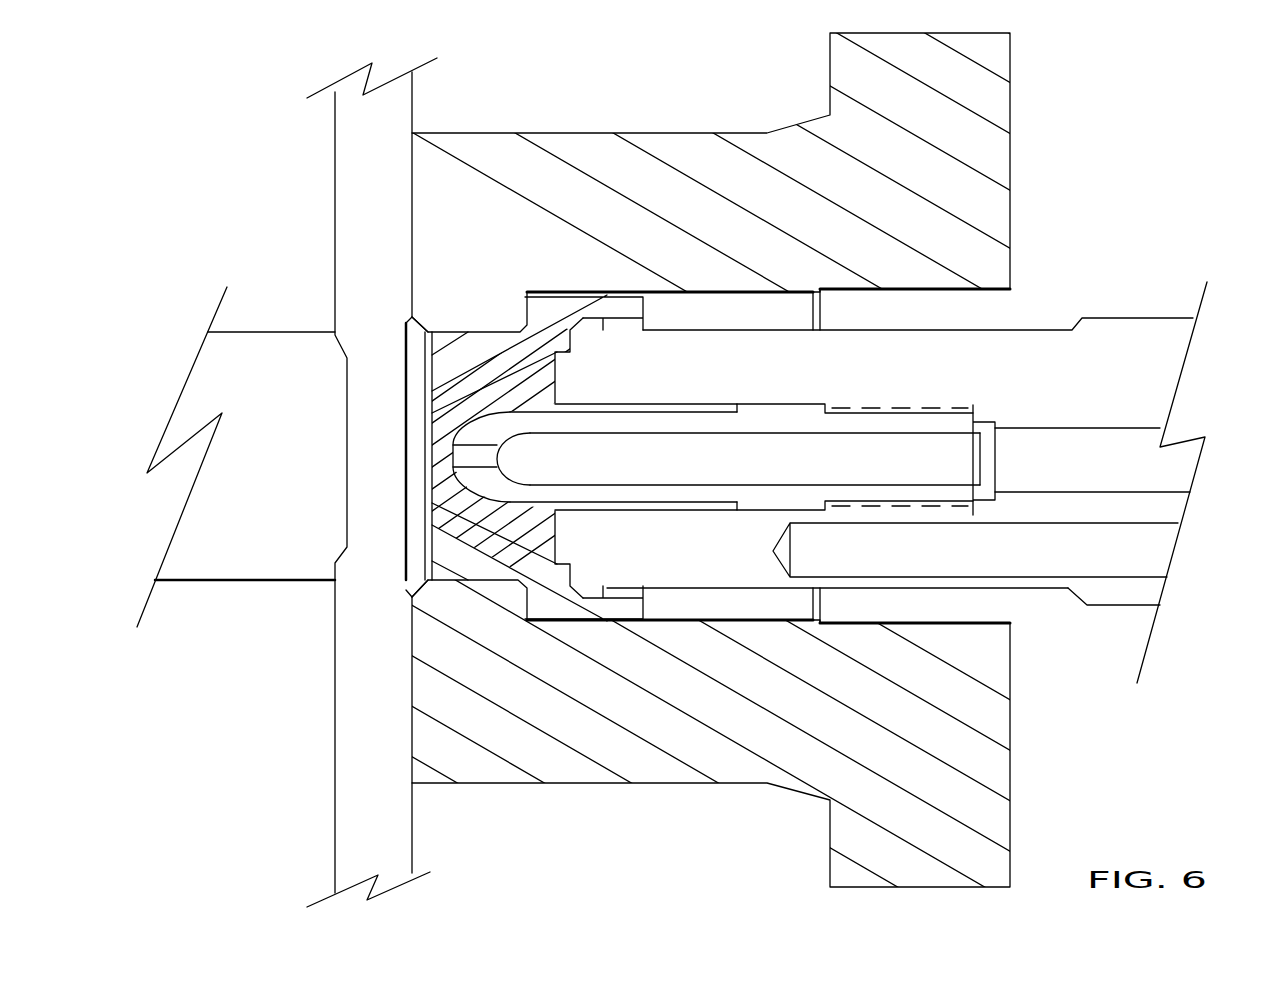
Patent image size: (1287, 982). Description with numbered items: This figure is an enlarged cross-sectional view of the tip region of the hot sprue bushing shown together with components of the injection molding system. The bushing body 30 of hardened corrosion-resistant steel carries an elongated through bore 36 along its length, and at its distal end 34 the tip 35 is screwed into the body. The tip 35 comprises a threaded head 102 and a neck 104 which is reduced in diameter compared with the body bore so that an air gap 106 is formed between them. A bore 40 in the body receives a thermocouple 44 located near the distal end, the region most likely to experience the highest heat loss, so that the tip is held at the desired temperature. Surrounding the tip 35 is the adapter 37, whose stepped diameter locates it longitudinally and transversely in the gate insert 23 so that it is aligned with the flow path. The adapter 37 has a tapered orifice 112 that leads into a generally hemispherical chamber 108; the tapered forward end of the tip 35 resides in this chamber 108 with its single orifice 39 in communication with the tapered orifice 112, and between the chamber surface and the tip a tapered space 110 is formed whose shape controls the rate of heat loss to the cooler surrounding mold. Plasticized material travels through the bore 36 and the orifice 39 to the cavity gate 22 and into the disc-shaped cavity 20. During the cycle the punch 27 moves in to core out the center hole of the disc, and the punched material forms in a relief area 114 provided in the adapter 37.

The cavity 20 is at (397, 113).
The orifice (cavity gate) 22 is at (430, 449).
The gate insert 23 is at (986, 93).
The punch 27 is at (243, 582).
The body 30 is at (1125, 306).
The distal end 34 is at (585, 582).
The tip 35 is at (493, 477).
The through bore 36 is at (1173, 468).
The adapter 37 is at (573, 307).
The orifice 39 is at (477, 453).
The bore 40 is at (1037, 582).
The thermocouple 44 is at (1090, 557).
The threaded head 102 is at (917, 413).
The neck 104 is at (695, 417).
The air gap 106 is at (640, 407).
The hemispherical chamber 108 is at (497, 390).
The tapered space 110 is at (533, 393).
The tapered orifice 112 is at (430, 445).
The relief area 114 is at (428, 388).